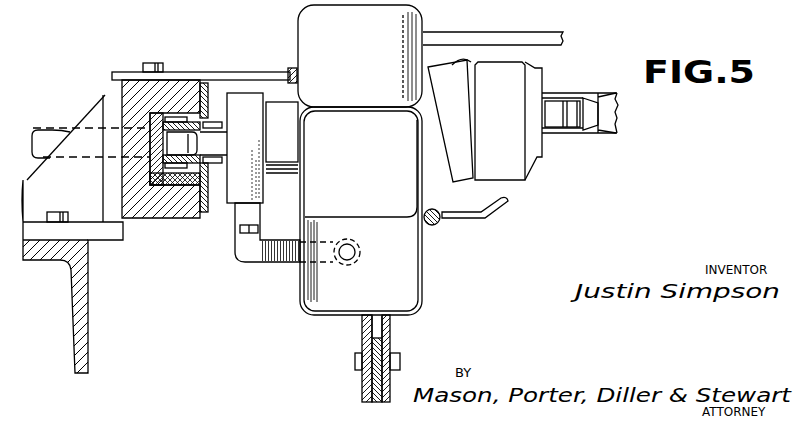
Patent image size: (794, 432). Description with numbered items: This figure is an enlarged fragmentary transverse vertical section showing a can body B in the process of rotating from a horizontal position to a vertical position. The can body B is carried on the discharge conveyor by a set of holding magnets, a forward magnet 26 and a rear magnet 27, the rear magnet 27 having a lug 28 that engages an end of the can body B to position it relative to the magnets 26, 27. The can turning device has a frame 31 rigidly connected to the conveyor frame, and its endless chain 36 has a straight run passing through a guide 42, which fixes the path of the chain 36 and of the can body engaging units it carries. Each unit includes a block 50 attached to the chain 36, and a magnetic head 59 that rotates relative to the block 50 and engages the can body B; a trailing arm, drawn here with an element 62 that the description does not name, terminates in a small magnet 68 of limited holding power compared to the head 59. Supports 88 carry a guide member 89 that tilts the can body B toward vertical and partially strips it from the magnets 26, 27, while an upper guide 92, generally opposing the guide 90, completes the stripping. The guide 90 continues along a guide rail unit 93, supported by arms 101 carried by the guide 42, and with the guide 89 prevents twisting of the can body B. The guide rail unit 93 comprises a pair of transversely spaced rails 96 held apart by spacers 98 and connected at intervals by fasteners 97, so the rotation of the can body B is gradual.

The forward magnet 26 is at (515, 78).
The rear magnet 27 is at (460, 68).
The lug 28 is at (453, 147).
The frame 31 is at (61, 267).
The endless chain 36 is at (50, 128).
The guide 42 is at (182, 212).
The block 50 is at (230, 202).
The head 59 is at (281, 176).
The angle bracket 62 is at (262, 266).
The small magnet 68 is at (361, 250).
The supports 88 is at (505, 204).
The guide member 89 is at (435, 225).
The guide 90 is at (292, 68).
The upper guide 92 is at (512, 30).
The guide rail unit 93 is at (393, 333).
The rails 96 is at (362, 333).
The fasteners 97 is at (400, 360).
The spacers 98 is at (372, 381).
The arms 101 is at (228, 74).
The can body B is at (423, 280).